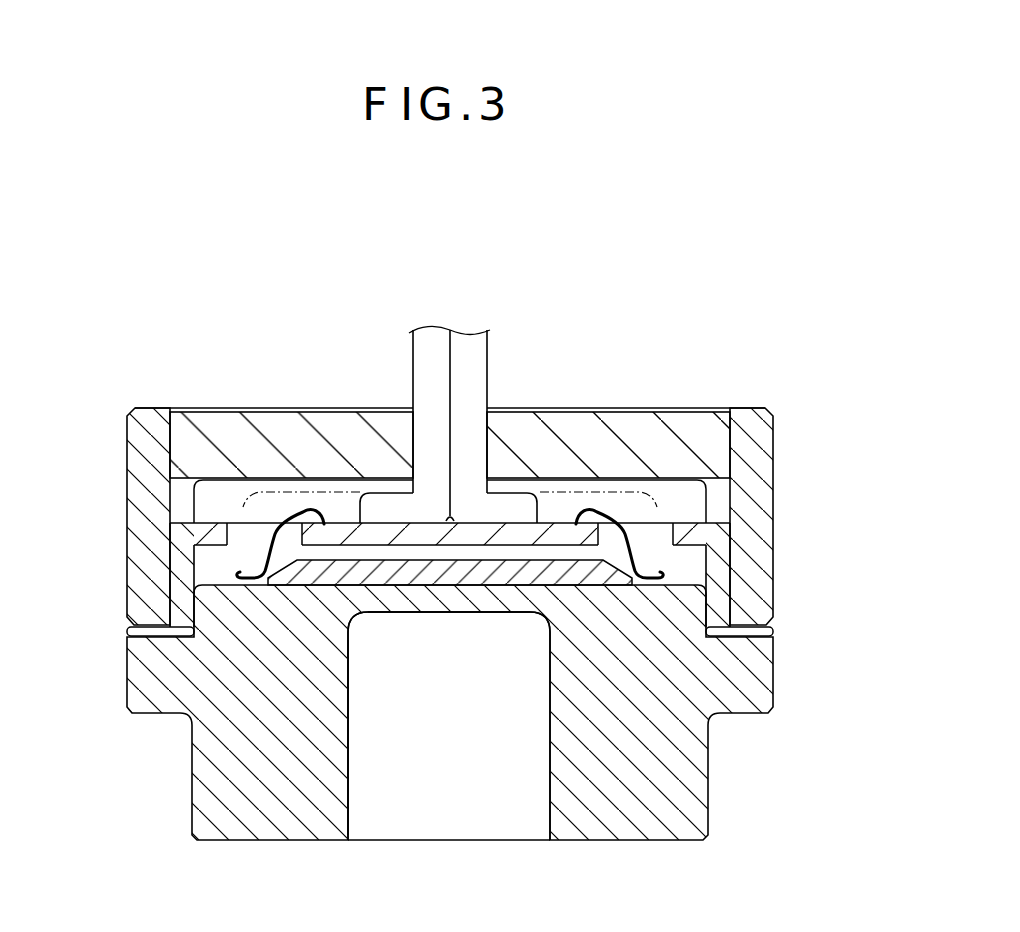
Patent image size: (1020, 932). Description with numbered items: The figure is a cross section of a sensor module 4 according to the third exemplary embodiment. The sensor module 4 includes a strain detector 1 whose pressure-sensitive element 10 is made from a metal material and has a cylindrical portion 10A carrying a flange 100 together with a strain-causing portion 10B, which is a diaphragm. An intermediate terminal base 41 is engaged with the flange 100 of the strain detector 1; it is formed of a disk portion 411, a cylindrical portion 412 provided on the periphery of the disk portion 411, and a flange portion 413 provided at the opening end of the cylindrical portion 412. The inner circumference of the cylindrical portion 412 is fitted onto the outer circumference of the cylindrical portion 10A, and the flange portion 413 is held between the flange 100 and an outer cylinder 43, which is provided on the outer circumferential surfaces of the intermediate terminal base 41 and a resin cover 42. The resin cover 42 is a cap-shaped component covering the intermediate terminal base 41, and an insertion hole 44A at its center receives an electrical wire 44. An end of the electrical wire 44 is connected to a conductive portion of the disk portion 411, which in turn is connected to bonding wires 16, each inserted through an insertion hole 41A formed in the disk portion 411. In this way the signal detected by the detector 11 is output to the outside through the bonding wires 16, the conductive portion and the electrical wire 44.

The strain detector 1 is at (150, 838).
The sensor module 4 is at (676, 283).
The pressure-sensitive element 10 is at (388, 730).
The cylindrical portion 10A is at (332, 717).
The strain-causing portion 10B is at (458, 602).
The flange 100 is at (145, 700).
The detector 11 is at (497, 595).
The bonding wires 16 is at (262, 563).
The intermediate terminal base 41 is at (180, 545).
The insertion hole 41A is at (237, 510).
The disk portion 411 is at (424, 535).
The cylindrical portion 412 is at (180, 591).
The flange portion 413 is at (145, 635).
The resin cover 42 is at (223, 423).
The outer cylinder 43 is at (130, 450).
The electrical wire 44 is at (476, 352).
The insertion hole 44A is at (485, 425).